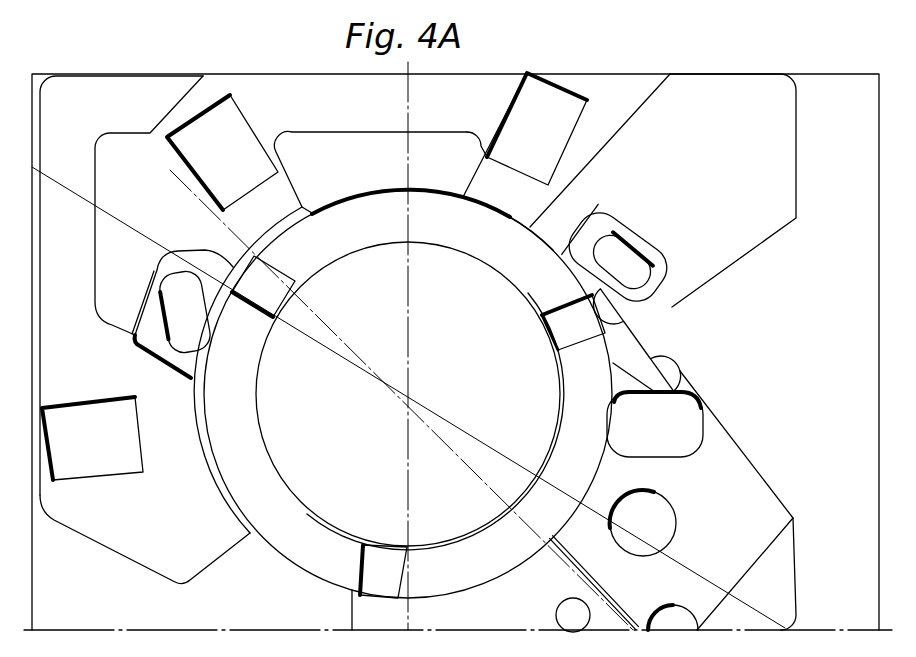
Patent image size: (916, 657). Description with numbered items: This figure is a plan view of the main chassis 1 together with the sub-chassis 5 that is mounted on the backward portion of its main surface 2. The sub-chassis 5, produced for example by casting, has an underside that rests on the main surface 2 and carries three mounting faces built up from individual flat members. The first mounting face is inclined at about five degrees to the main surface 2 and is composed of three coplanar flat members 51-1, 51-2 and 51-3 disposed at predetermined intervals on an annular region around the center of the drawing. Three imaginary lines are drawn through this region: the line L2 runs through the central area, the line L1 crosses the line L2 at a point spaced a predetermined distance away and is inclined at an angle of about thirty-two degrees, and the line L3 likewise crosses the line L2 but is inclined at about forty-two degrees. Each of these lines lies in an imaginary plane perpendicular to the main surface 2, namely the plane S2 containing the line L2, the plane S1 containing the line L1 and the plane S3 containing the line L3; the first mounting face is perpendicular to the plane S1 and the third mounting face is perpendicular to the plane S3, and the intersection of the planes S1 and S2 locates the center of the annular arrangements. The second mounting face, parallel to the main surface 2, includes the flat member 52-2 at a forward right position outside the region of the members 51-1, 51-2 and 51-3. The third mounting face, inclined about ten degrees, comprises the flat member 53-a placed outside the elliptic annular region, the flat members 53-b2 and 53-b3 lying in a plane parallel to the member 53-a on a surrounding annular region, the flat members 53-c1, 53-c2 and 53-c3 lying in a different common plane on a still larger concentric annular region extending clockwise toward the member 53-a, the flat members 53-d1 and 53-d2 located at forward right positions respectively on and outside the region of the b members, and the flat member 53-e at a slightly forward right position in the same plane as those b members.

The main chassis 1 is at (828, 80).
The main surface 2 is at (864, 318).
The sub-chassis 5 is at (276, 80).
The flat member 51-1 is at (383, 556).
The flat member 51-2 is at (285, 300).
The flat member 51-3 is at (548, 326).
The flat member 52-2 is at (561, 615).
The flat member 53-a is at (645, 357).
The flat member 53-b2 is at (185, 297).
The flat member 53-b3 is at (637, 265).
The flat member 53-c1 is at (108, 465).
The flat member 53-c2 is at (188, 135).
The flat member 53-c3 is at (543, 88).
The flat member 53-d1 is at (670, 514).
The flat member 53-d2 is at (667, 616).
The flat member 53-e is at (668, 455).
The line L1 is at (445, 420).
The line L2 is at (410, 302).
The line L3 is at (447, 445).
The imaginary plane S1 is at (476, 442).
The imaginary plane S2 is at (408, 372).
The imaginary plane S3 is at (483, 473).